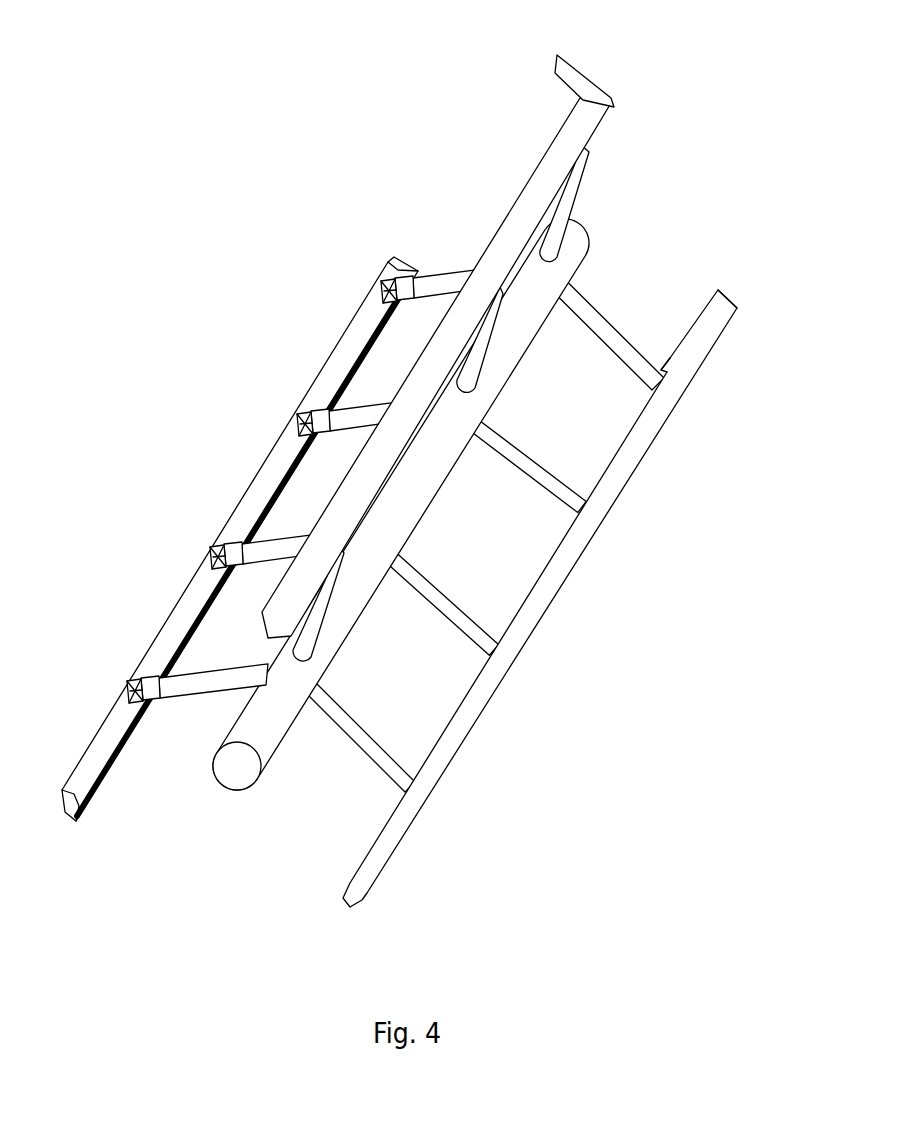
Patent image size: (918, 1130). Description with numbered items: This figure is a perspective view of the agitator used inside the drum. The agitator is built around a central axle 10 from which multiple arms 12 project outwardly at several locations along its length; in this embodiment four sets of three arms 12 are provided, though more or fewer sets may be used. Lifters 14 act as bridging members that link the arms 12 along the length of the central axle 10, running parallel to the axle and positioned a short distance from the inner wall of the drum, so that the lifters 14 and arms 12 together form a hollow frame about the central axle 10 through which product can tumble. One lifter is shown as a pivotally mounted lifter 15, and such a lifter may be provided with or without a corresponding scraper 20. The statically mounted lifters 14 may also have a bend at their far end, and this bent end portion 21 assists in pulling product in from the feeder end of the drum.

The central axle 10 is at (233, 773).
The arms 12 is at (433, 607).
The lifters 14 is at (527, 217).
The pivotally mounted lifter 15 is at (183, 627).
The scraper 20 is at (73, 822).
The bent end portion 21 is at (577, 77).